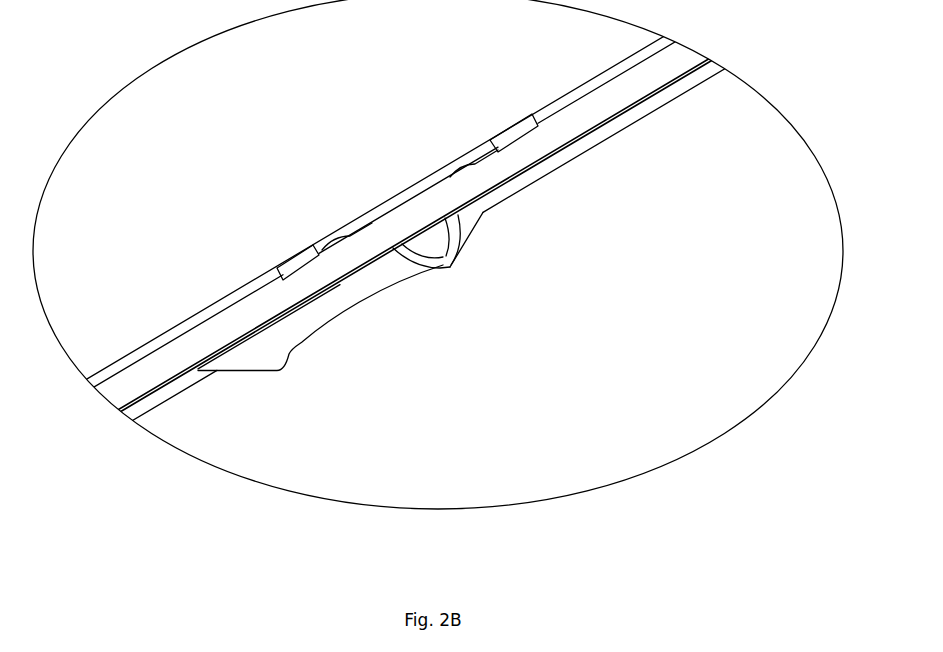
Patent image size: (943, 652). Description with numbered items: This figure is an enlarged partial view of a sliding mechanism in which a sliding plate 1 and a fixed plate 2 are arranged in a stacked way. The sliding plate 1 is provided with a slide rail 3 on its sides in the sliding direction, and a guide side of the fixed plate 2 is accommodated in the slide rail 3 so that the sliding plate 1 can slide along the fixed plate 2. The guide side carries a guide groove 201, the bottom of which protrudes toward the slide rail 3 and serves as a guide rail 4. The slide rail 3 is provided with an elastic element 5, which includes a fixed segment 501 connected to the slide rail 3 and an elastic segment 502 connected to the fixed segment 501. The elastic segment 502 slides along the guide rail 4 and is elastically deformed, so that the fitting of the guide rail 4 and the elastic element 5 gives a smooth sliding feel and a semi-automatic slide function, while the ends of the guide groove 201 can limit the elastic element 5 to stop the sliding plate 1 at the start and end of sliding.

The sliding plate 1 is at (587, 107).
The fixed plate 2 is at (373, 437).
The slide rail 3 is at (298, 263).
The guide rail 4 is at (351, 303).
The elastic element 5 is at (428, 108).
The guide groove 201 is at (249, 352).
The fixed segment 501 is at (348, 238).
The elastic segment 502 is at (445, 258).